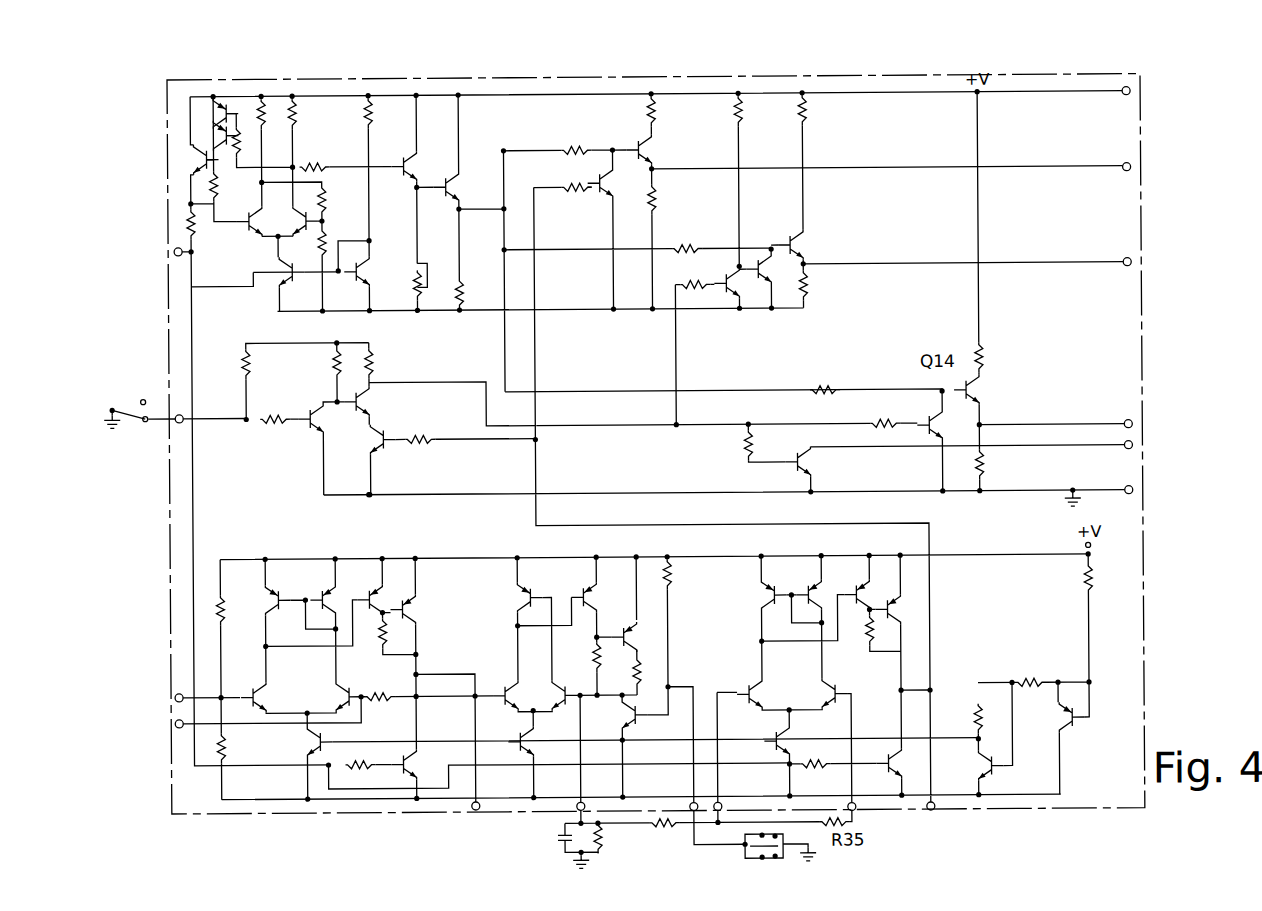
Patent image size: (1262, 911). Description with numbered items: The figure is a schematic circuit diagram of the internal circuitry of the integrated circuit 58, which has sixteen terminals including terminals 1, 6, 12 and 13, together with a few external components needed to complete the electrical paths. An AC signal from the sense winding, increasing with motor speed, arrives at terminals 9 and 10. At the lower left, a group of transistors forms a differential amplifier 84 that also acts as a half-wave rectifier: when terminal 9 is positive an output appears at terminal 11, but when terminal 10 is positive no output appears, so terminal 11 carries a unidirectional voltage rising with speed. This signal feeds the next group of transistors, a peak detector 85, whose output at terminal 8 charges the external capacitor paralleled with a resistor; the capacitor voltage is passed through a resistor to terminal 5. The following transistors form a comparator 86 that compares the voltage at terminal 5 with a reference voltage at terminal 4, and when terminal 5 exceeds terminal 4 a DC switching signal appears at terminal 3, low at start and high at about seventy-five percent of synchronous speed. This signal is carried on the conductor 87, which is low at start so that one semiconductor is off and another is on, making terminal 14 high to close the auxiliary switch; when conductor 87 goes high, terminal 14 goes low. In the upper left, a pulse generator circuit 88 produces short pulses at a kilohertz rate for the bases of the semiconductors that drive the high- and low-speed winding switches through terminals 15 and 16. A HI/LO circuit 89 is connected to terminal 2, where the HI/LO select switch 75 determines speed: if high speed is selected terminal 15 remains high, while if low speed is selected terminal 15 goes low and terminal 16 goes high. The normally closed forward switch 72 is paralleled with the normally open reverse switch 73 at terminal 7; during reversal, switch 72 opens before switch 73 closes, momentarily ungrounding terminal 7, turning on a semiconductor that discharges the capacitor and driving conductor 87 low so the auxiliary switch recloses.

The integrated circuit 58 is at (1141, 212).
The terminal 6 is at (1131, 96).
The terminal 14 is at (1131, 171).
The terminal 15 is at (1131, 267).
The terminal 16 is at (1131, 428).
The terminal 1 is at (1131, 450).
The terminal 13 is at (1131, 495).
The terminal 12 is at (173, 256).
The terminal 2 is at (173, 425).
The HI/LO switch 75 is at (110, 410).
The terminal 9 is at (171, 696).
The terminal 10 is at (171, 723).
The terminal 11 is at (468, 813).
The terminal 8 is at (572, 812).
The terminal 7 is at (687, 805).
The terminal 5 is at (717, 806).
The terminal 4 is at (851, 814).
The terminal 3 is at (931, 814).
The pulse generator circuit 88 is at (460, 146).
The HI/LO circuit 89 is at (393, 375).
The differential amplifier 84 is at (349, 556).
The peak detector 85 is at (588, 555).
The comparator 86 is at (862, 555).
The conductor 87 is at (930, 606).
The forward switch 72 is at (772, 838).
The reverse switch 73 is at (748, 855).